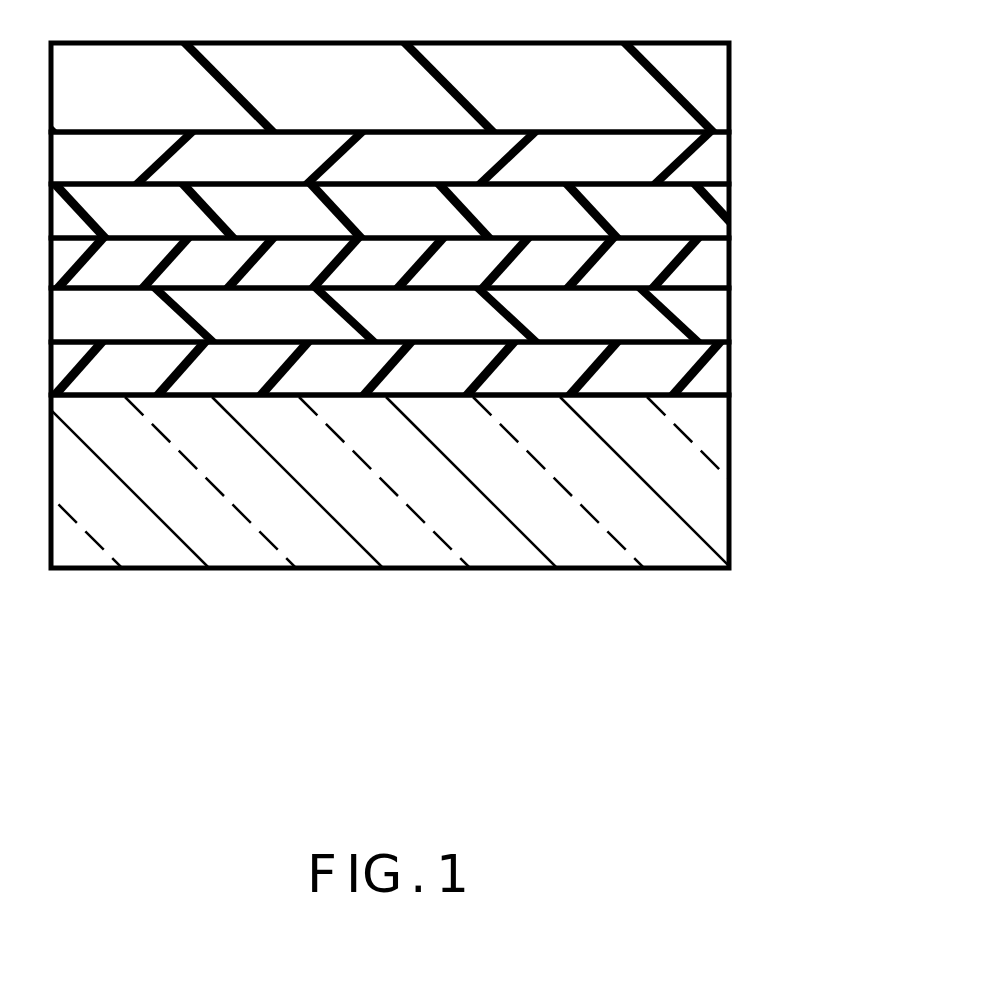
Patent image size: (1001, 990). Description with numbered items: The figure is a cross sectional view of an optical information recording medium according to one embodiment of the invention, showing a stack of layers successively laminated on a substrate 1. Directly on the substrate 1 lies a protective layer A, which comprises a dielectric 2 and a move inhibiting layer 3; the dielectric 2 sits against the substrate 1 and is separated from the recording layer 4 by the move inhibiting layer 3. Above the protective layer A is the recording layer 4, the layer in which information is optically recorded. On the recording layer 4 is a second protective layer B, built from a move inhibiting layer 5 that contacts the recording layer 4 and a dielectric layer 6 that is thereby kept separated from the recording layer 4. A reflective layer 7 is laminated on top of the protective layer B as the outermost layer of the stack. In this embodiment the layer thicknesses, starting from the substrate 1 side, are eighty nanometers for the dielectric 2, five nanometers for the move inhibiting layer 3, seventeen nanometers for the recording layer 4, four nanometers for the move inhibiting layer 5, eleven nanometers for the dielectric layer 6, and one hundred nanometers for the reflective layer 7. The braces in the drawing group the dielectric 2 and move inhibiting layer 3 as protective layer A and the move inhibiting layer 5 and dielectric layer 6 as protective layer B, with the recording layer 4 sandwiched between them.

The substrate 1 is at (700, 487).
The dielectric 2 is at (708, 373).
The move inhibiting layer 3 is at (703, 318).
The recording layer 4 is at (703, 267).
The move inhibiting layer 5 is at (703, 218).
The dielectric layer 6 is at (712, 157).
The reflective layer 7 is at (712, 85).
The protective layer A is at (483, 350).
The protective layer B is at (486, 172).